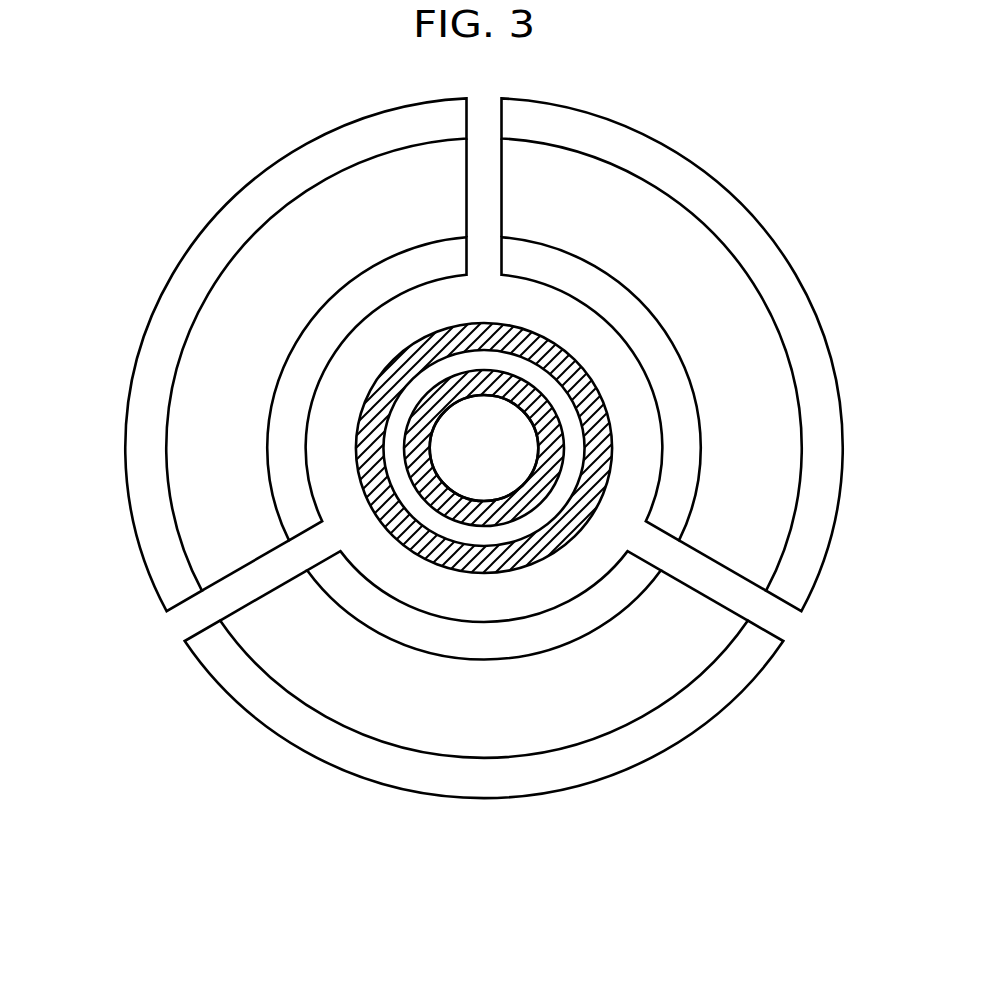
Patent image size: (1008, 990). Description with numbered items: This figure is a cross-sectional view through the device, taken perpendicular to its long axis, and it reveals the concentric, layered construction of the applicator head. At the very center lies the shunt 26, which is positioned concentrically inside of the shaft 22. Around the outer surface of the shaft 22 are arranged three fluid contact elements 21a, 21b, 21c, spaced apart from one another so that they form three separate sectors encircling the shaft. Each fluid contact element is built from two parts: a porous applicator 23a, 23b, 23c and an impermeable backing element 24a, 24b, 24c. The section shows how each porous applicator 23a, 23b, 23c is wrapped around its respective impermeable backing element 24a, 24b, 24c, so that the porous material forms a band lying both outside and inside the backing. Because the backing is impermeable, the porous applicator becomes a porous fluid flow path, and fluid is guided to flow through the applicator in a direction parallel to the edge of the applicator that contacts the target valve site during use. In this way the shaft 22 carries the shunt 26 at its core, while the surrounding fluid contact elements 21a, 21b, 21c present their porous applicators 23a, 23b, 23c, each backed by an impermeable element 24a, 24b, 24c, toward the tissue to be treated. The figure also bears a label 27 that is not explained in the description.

The fluid contact element 21a is at (702, 354).
The fluid contact element 21b is at (267, 354).
The fluid contact element 21c is at (484, 702).
The shaft 22 is at (567, 527).
The porous applicator 23a is at (675, 515).
The porous applicator 23b is at (152, 535).
The porous applicator 23c is at (565, 625).
The impermeable backing element 24a is at (753, 398).
The impermeable backing element 24b is at (228, 413).
The impermeable backing element 24c is at (398, 717).
The shunt 26 is at (497, 438).
The inner annular member 27 is at (570, 438).